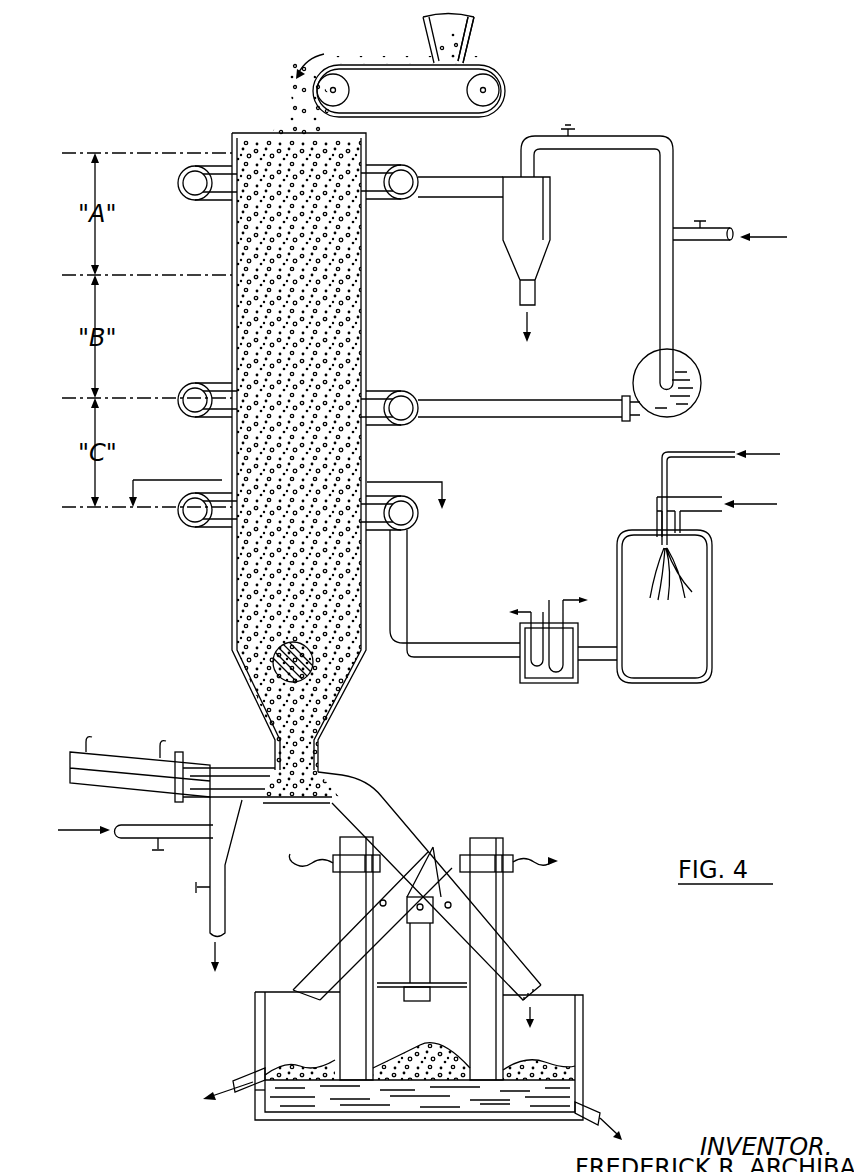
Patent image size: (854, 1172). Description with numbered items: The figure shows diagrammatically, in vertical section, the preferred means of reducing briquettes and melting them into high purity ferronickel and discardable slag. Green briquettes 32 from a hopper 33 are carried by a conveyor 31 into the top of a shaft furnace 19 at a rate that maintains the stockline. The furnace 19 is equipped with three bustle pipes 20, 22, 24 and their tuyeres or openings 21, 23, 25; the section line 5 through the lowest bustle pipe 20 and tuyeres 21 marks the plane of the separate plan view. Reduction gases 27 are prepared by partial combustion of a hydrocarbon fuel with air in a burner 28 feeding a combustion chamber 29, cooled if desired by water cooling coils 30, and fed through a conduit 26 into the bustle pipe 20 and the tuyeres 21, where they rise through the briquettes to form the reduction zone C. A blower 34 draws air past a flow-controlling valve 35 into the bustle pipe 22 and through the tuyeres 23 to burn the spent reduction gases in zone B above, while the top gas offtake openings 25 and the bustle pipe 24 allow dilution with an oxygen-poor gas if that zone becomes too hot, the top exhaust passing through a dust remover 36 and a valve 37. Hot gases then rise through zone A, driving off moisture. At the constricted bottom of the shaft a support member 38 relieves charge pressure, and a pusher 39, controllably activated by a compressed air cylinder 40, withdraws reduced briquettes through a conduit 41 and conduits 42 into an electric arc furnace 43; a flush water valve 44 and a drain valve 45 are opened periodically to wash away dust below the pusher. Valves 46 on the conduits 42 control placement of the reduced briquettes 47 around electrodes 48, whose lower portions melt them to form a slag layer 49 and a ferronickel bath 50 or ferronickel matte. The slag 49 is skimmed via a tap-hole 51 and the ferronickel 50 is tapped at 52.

The section line 5 is at (285, 511).
The shaft furnace 19 is at (368, 322).
The bustle pipe 20 is at (190, 528).
The tuyeres 21 is at (222, 528).
The bustle pipe 22 is at (192, 383).
The tuyeres 23 is at (220, 417).
The bustle pipe 24 is at (190, 165).
The top gas offtake openings 25 is at (223, 197).
The conduit 26 is at (474, 642).
The reduction gases 27 is at (690, 590).
The burner 28 is at (687, 519).
The combustion chamber 29 is at (713, 650).
The water cooling coils 30 is at (566, 666).
The conveyor 31 is at (430, 114).
The green briquettes 32 is at (466, 38).
The hopper 33 is at (468, 56).
The blower 34 is at (701, 385).
The valve 35 is at (700, 219).
The dust remover 36 is at (552, 212).
The valve 37 is at (570, 129).
The support member 38 is at (310, 673).
The pusher 39 is at (243, 777).
The compressed air cylinder 40 is at (117, 756).
The conduit 41 is at (371, 807).
The conduits 42 is at (322, 958).
The electric arc furnace 43 is at (255, 1043).
The flush water valve 44 is at (158, 852).
The drain valve 45 is at (194, 895).
The valves 46 is at (421, 904).
The reduced briquettes 47 is at (313, 1073).
The electrodes 48 is at (347, 896).
The slag layer 49 is at (267, 1090).
The ferronickel bath 50 is at (393, 1114).
The tap-hole 51 is at (250, 1071).
The tap 52 is at (590, 1112).